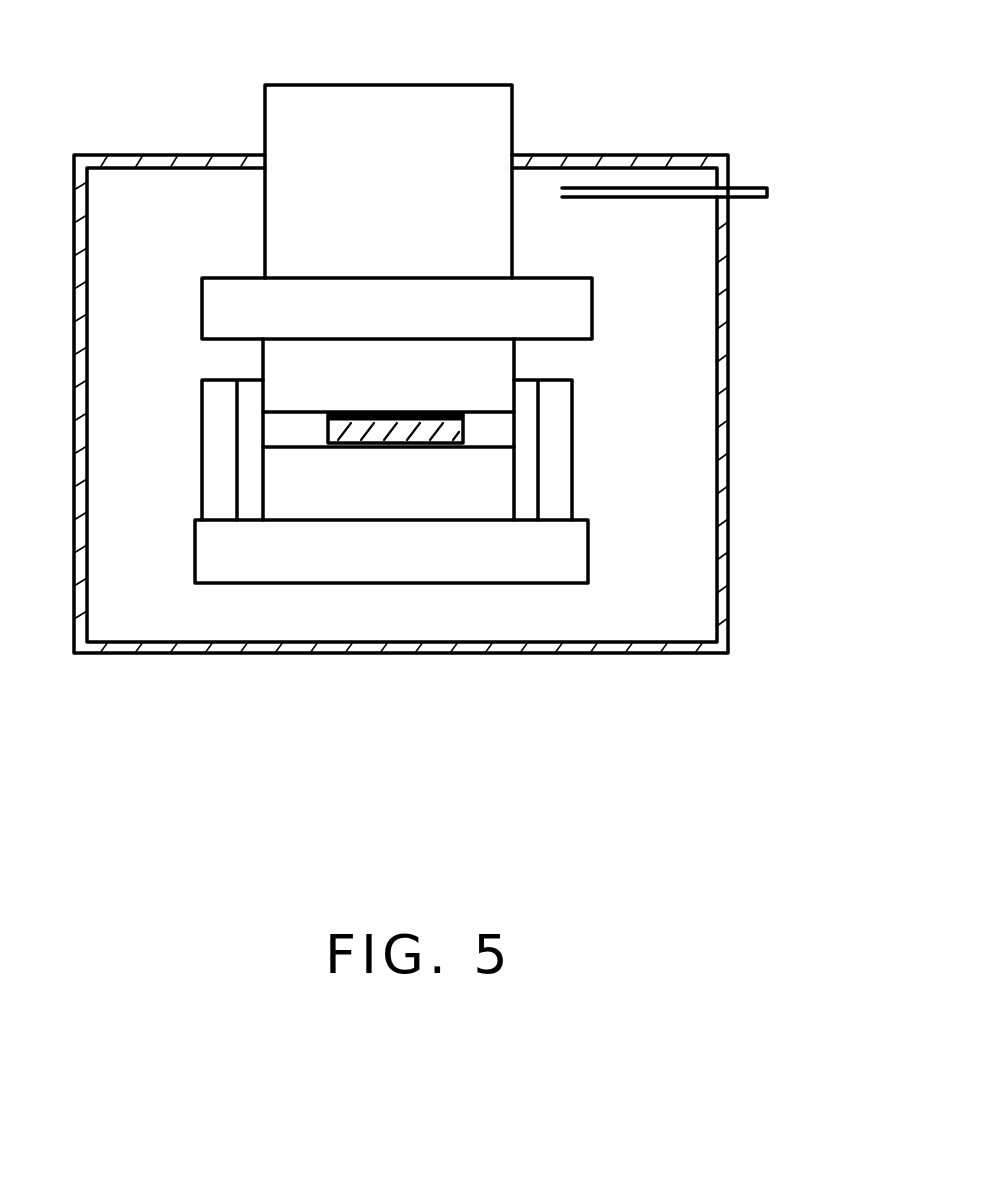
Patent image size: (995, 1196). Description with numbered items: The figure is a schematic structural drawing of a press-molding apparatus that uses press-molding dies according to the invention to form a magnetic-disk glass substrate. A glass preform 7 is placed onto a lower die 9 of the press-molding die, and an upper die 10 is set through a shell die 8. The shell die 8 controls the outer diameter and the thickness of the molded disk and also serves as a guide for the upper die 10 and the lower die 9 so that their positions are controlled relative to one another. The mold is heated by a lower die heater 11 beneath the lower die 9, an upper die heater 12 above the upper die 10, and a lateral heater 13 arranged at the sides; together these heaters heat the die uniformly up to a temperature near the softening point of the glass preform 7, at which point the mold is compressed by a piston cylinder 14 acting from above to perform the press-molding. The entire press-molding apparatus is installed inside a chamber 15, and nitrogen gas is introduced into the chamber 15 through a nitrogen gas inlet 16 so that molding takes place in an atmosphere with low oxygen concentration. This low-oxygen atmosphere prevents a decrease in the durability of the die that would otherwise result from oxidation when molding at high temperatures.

The glass preform 7 is at (383, 433).
The shell die 8 is at (527, 430).
The lower die 9 is at (462, 497).
The upper die 10 is at (490, 370).
The lower die heater 11 is at (570, 557).
The upper die heater 12 is at (575, 307).
The lateral heater 13 is at (565, 487).
The piston cylinder 14 is at (393, 130).
The chamber 15 is at (557, 648).
The nitrogen gas inlet 16 is at (772, 195).